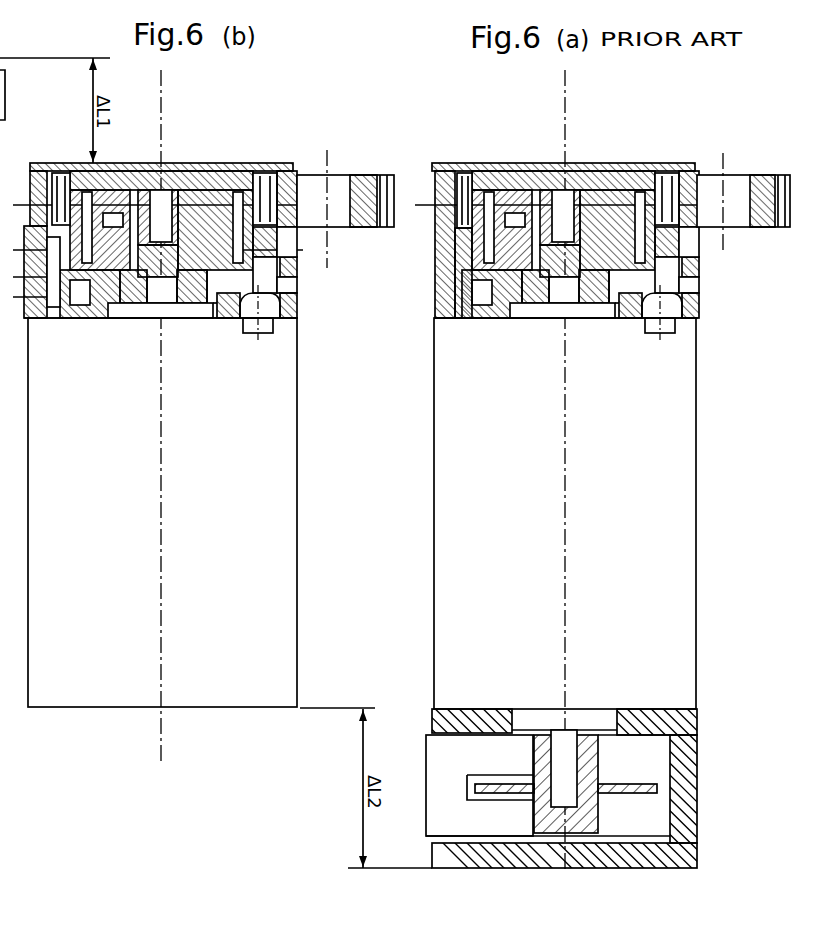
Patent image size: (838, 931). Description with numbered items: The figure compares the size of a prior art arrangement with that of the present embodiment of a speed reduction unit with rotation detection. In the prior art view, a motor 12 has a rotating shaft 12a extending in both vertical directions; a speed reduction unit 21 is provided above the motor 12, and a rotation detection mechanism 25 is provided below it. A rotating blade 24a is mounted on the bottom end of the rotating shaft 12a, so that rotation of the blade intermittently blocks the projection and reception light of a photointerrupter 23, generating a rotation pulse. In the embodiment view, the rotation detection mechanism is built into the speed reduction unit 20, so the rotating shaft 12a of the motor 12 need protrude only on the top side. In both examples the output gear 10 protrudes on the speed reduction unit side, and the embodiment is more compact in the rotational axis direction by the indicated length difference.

In FIG. 6B, the output gear 10 is at (362, 228).
In FIG. 6A, the output gear 10 is at (762, 228).
In FIG. 6B, the motor 12 is at (283, 483).
In FIG. 6A, the motor 12 is at (681, 483).
In FIG. 6B, the rotating shaft 12a is at (166, 320).
In FIG. 6A, the rotating shaft 12a is at (558, 320).
In FIG. 6B, the speed reduction unit 20 is at (207, 158).
In FIG. 6A, the speed reduction unit 21 is at (593, 158).
In FIG. 6A, the photointerrupter 23 is at (445, 750).
In FIG. 6A, the rotating blade 24a is at (598, 766).
In FIG. 6A, the rotation detection mechanism 25 is at (708, 822).